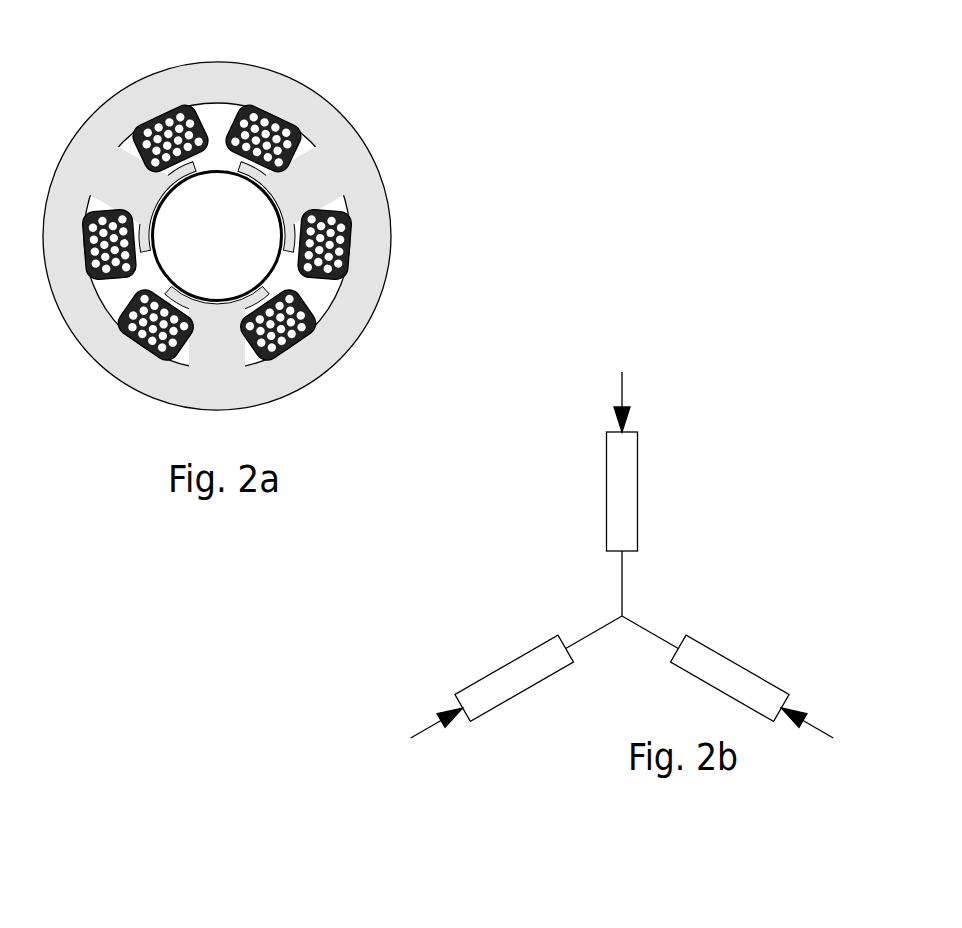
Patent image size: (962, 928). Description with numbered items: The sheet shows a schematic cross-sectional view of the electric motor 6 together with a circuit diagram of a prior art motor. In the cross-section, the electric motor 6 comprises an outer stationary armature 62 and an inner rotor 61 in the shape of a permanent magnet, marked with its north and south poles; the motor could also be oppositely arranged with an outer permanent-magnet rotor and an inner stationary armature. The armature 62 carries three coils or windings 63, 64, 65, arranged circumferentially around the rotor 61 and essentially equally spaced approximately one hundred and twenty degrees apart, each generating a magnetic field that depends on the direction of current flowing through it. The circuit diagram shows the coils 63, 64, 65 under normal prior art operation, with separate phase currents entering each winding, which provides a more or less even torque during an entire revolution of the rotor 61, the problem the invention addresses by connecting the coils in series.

In FIG. 2A, the electric motor 6 is at (289, 205).
In FIG. 2B, the electric motor 6 is at (652, 600).
In FIG. 2A, the rotor 61 is at (257, 183).
In FIG. 2A, the outer stationary armature 62 is at (384, 252).
In FIG. 2A, the coil 63 is at (285, 332).
In FIG. 2B, the coil 63 is at (745, 668).
In FIG. 2A, the coil 64 is at (167, 130).
In FIG. 2B, the coil 64 is at (528, 690).
In FIG. 2A, the coil 65 is at (272, 125).
In FIG. 2B, the coil 65 is at (608, 478).